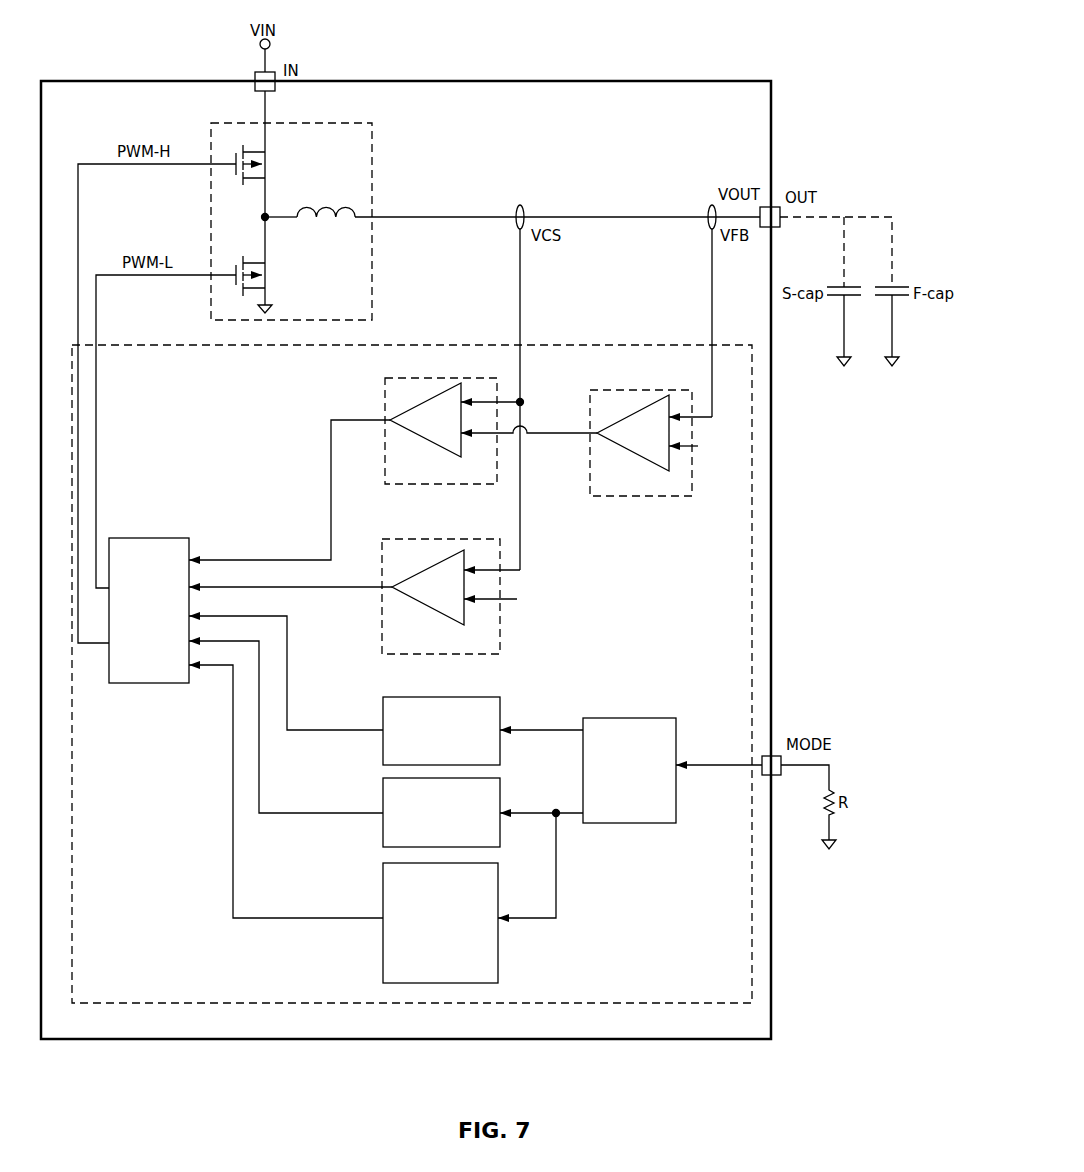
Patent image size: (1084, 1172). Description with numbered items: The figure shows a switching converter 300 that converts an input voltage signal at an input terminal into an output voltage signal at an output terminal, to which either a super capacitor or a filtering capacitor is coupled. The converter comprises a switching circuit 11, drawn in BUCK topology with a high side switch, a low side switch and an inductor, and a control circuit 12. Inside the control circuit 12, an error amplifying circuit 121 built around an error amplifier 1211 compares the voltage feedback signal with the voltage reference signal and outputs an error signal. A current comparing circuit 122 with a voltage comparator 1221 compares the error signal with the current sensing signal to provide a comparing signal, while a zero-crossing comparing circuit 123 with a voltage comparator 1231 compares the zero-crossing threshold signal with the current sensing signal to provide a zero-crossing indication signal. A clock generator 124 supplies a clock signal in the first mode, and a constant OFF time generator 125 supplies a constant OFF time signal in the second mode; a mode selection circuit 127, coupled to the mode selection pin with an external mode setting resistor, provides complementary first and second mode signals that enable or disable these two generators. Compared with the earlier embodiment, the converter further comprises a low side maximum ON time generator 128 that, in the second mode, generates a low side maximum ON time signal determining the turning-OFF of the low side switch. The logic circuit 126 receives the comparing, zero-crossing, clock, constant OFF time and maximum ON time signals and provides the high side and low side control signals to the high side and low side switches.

The switching converter 300 is at (483, 42).
The switching circuit 11 is at (373, 283).
The control circuit 12 is at (581, 346).
The error amplifying circuit 121 is at (641, 431).
The error amplifier 1211 is at (619, 449).
The current comparing circuit 122 is at (441, 421).
The voltage comparator 1221 is at (421, 438).
The zero-crossing comparing circuit 123 is at (441, 583).
The voltage comparator 1231 is at (425, 607).
The clock generator 124 is at (499, 700).
The constant OFF time generator 125 is at (499, 781).
The logic circuit 126 is at (171, 538).
The mode selection circuit 127 is at (678, 726).
The low side maximum ON time generator 128 is at (498, 866).